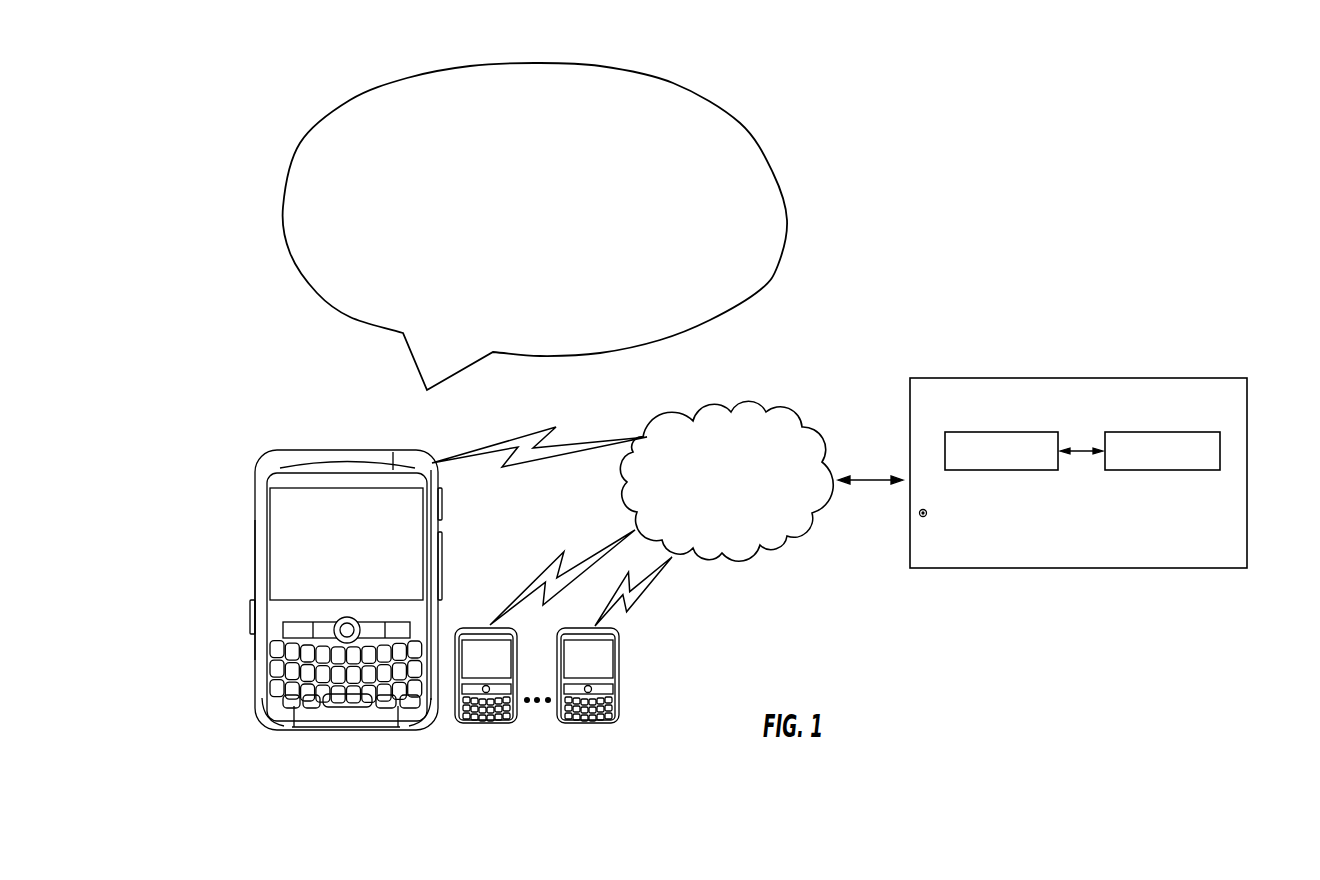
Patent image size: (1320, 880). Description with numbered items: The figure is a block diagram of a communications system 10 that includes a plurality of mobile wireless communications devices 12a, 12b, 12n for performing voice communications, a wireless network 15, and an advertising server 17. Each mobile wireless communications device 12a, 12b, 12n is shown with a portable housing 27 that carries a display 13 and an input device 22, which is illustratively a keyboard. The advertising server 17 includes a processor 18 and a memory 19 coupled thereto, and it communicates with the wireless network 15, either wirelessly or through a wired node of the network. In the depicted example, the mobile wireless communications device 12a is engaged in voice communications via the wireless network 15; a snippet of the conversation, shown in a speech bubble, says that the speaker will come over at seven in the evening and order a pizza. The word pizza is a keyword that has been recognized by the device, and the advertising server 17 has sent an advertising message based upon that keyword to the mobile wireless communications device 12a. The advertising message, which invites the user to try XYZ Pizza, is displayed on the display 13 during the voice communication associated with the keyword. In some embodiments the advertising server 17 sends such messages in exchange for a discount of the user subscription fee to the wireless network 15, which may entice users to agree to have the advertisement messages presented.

The communications system 10 is at (335, 93).
The mobile wireless communications device 12a is at (278, 730).
The mobile wireless communications device 12b is at (483, 724).
The mobile wireless communications device 12n is at (585, 724).
The display 13 is at (290, 500).
The wireless network 15 is at (740, 562).
The advertising server 17 is at (968, 353).
The processor 18 is at (945, 455).
The memory 19 is at (1207, 432).
The input device 22 is at (273, 650).
The portable housing 27 is at (252, 578).